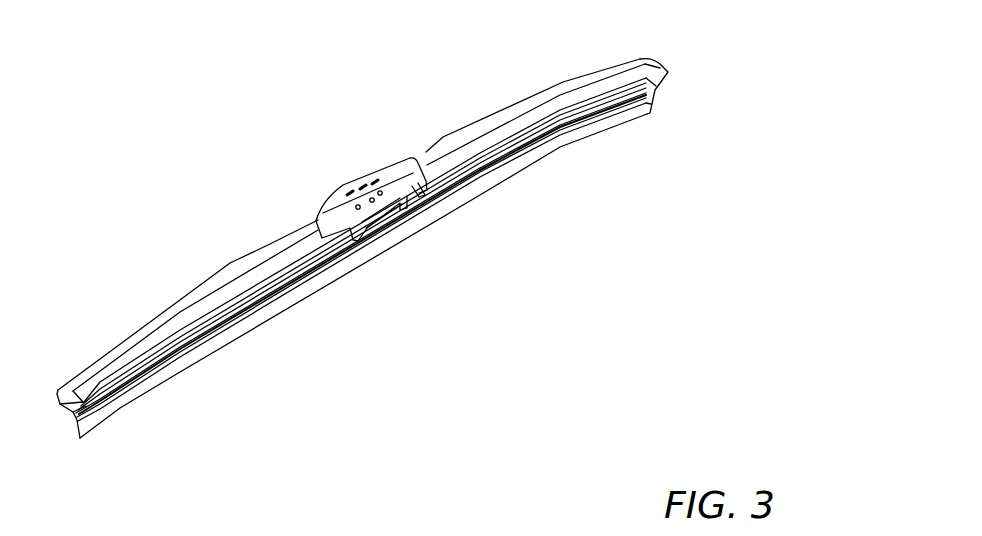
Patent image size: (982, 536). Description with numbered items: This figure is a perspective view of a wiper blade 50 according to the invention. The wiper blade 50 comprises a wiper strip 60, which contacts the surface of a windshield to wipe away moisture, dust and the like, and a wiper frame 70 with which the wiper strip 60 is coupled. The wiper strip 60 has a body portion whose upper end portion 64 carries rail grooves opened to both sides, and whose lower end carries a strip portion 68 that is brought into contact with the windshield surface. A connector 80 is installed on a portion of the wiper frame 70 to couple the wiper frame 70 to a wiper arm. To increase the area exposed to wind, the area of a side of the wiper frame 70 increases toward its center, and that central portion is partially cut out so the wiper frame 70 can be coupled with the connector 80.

The wiper blade 50 is at (300, 151).
The wiper strip 60 is at (253, 338).
The upper end portion 64 is at (97, 376).
The strip portion 68 is at (314, 287).
The wiper frame 70 is at (182, 286).
The connector 80 is at (384, 162).